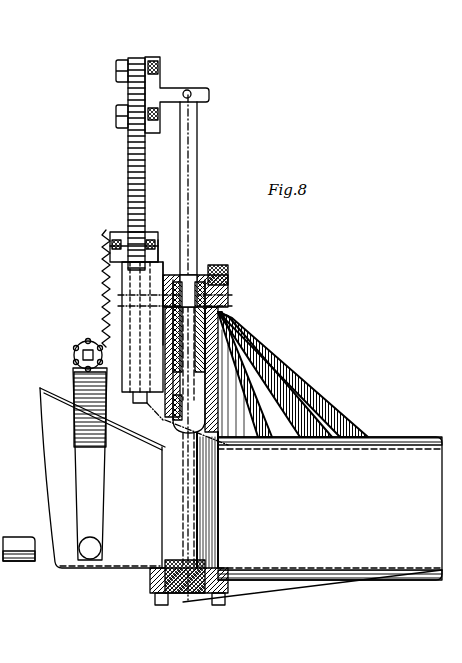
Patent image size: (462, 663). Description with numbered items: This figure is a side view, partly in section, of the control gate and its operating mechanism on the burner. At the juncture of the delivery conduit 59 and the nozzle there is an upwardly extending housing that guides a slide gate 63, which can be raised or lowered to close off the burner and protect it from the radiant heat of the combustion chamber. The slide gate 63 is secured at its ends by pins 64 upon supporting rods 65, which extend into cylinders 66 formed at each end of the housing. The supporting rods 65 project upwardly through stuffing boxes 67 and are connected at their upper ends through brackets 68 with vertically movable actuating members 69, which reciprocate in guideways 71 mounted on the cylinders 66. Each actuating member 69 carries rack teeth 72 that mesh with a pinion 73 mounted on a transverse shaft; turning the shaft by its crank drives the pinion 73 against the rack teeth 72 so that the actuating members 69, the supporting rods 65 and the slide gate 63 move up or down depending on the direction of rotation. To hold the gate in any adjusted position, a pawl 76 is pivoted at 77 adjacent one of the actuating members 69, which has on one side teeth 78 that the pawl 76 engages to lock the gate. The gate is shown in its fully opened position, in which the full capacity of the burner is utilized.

The delivery conduit 59 is at (45, 415).
The slide gate 63 is at (226, 342).
The pins 64 is at (224, 312).
The supporting rods 65 is at (199, 165).
The cylinders 66 is at (240, 370).
The stuffing boxes 67 is at (212, 265).
The brackets 68 is at (161, 78).
The actuating members 69 is at (128, 163).
The guideways 71 is at (160, 402).
The rack teeth 72 is at (122, 290).
The pinion 73 is at (90, 340).
The pawl 76 is at (128, 222).
The pivot 77 is at (103, 243).
The teeth 78 is at (128, 183).